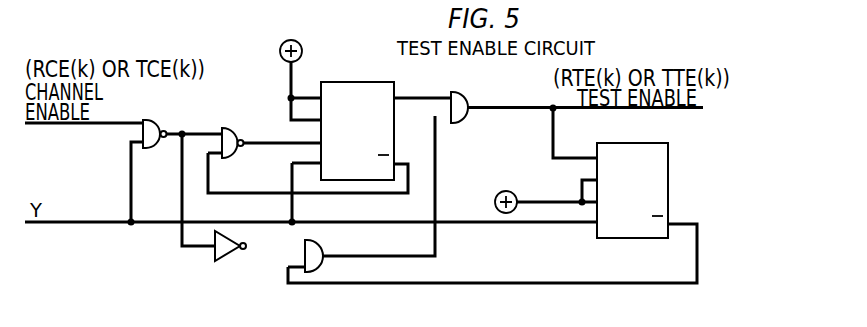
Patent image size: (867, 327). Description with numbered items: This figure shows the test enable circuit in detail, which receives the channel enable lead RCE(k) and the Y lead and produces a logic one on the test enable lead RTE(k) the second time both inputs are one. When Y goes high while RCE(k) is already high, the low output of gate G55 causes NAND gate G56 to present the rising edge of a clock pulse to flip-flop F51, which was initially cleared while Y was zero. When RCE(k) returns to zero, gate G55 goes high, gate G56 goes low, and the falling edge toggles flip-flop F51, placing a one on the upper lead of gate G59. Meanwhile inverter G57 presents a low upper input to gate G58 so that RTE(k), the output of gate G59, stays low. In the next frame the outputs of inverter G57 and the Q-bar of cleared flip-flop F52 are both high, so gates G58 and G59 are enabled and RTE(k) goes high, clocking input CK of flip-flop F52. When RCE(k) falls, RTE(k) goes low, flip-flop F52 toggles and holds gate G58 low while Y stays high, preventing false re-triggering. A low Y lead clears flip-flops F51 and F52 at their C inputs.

The gate G55 is at (162, 123).
The NAND gate G56 is at (242, 135).
The inverter G57 is at (222, 259).
The gate G58 is at (327, 250).
The gate G59 is at (467, 97).
The flip-flop F51 is at (357, 131).
The flip-flop F52 is at (632, 190).